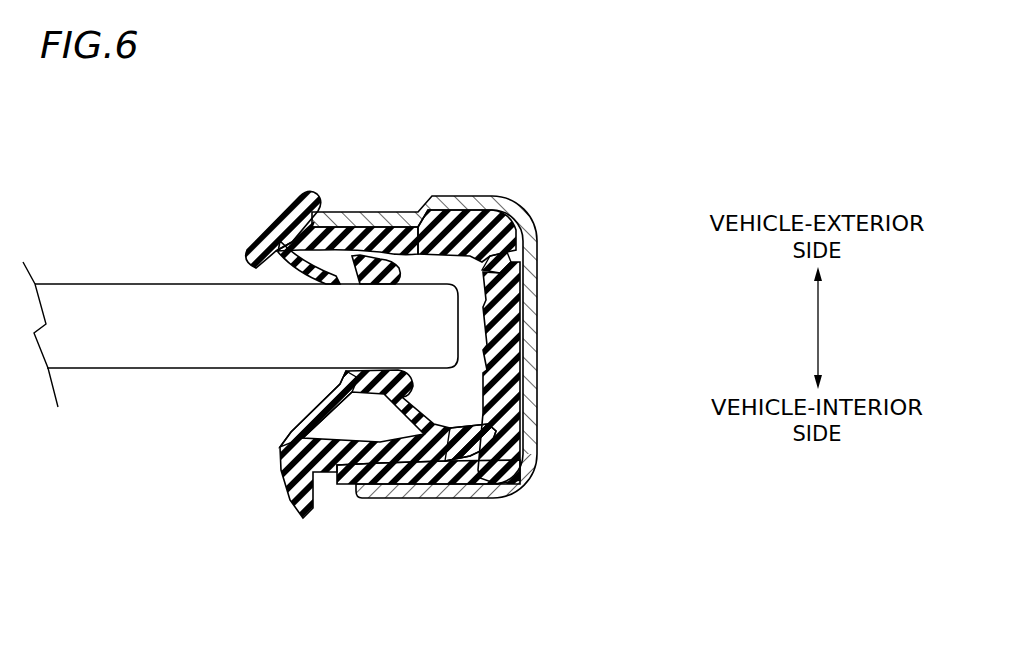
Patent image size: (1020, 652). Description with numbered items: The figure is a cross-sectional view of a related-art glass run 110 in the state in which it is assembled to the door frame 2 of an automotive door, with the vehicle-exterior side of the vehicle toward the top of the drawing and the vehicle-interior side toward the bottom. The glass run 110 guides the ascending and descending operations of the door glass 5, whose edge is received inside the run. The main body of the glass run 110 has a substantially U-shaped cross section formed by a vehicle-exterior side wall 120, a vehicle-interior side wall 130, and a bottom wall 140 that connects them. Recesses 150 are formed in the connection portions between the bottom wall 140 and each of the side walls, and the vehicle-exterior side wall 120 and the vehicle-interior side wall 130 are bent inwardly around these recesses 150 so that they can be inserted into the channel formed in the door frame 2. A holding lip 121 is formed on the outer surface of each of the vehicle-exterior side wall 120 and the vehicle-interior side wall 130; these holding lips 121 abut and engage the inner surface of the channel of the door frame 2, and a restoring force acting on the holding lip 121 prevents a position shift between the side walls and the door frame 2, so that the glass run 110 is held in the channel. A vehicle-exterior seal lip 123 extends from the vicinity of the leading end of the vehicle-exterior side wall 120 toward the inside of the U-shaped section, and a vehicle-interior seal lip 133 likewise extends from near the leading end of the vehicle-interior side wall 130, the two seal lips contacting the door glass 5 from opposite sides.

The door frame 2 is at (531, 296).
The door glass 5 is at (83, 284).
The glass run 110 is at (247, 189).
The vehicle-exterior side wall 120 is at (364, 237).
The holding lip 121 is at (462, 222).
The vehicle-exterior seal lip 123 is at (341, 277).
The vehicle-interior side wall 130 is at (350, 452).
The vehicle-interior seal lip 133 is at (343, 383).
The bottom wall 140 is at (519, 342).
The recess 150 is at (521, 228).